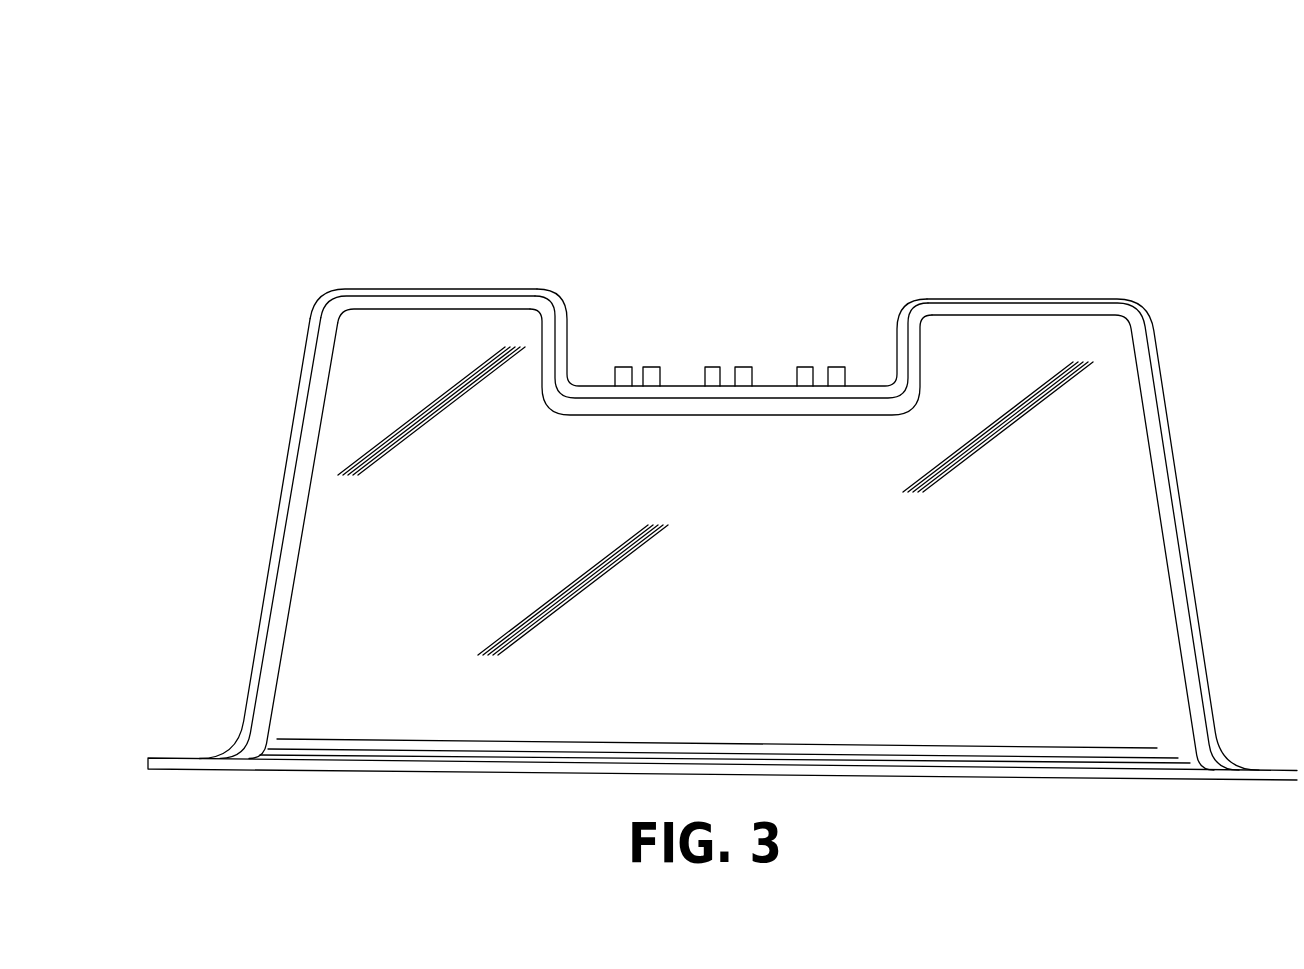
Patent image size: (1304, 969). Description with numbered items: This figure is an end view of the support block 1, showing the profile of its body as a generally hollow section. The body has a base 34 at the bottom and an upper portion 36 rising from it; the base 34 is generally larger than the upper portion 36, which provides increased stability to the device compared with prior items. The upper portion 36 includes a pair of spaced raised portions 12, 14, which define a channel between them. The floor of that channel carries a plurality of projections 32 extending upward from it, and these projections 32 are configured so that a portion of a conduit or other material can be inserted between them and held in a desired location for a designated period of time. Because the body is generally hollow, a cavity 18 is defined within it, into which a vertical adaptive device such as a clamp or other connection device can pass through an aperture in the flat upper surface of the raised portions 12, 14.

The support block 1 is at (873, 153).
The raised portion 12 is at (327, 293).
The raised portion 14 is at (1136, 320).
The cavity 18 is at (587, 641).
The projections 32 is at (617, 373).
The base 34 is at (182, 758).
The upper portion 36 is at (322, 375).